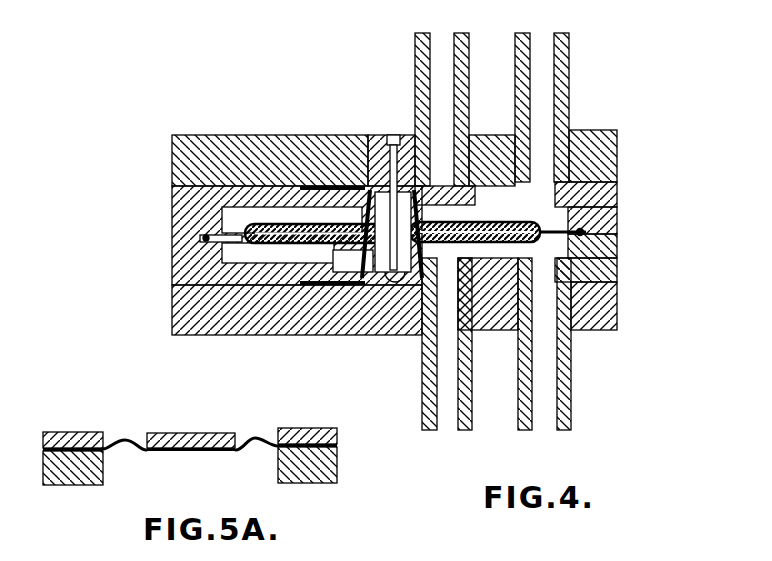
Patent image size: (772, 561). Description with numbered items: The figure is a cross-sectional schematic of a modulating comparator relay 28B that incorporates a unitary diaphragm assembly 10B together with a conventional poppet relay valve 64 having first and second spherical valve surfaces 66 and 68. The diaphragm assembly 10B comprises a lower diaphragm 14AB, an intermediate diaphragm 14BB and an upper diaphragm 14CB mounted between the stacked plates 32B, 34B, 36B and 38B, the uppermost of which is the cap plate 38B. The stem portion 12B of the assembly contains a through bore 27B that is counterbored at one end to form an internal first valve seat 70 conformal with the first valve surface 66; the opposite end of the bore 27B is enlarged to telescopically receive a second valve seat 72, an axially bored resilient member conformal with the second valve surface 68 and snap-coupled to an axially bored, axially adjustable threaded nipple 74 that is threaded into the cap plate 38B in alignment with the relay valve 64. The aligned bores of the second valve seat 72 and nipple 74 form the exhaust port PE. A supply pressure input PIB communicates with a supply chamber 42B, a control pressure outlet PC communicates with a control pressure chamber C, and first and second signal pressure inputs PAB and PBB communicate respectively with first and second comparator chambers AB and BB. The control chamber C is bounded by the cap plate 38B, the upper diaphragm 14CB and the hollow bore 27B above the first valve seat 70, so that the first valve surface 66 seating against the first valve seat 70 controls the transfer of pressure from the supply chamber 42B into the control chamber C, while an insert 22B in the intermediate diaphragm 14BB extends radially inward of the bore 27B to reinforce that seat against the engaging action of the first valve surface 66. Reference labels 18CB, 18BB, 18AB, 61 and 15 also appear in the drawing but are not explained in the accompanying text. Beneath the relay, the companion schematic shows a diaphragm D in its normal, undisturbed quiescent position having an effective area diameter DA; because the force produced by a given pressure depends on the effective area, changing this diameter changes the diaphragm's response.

In FIG. 4, the modulating comparator relay 28B is at (120, 158).
In FIG. 4, the insert 22B is at (297, 310).
In FIG. 4, the second comparator chamber BB is at (247, 228).
In FIG. 4, the first comparator chamber AB is at (249, 262).
In FIG. 4, the control pressure chamber C is at (353, 261).
In FIG. 4, the left passage 18BB is at (200, 238).
In FIG. 4, the poppet relay valve 64 is at (348, 213).
In FIG. 4, the second valve seat 72 is at (498, 221).
In FIG. 4, the central cavity 15 is at (402, 239).
In FIG. 4, the exhaust port PE is at (394, 135).
In FIG. 4, the first valve seat 70 is at (397, 280).
In FIG. 4, the threaded nipple 74 is at (388, 135).
In FIG. 4, the through bore 27B is at (372, 176).
In FIG. 4, the second spherical valve surface 68 is at (420, 190).
In FIG. 4, the stem guide lower 61 is at (437, 190).
In FIG. 4, the upper diaphragm passage 18CB is at (315, 186).
In FIG. 4, the upper diaphragm 14CB is at (328, 186).
In FIG. 4, the lower diaphragm passage 18AB is at (262, 252).
In FIG. 4, the diaphragm 14AB is at (322, 270).
In FIG. 4, the first spherical valve surface 66 is at (378, 274).
In FIG. 4, the control pressure outlet PC is at (428, 33).
In FIG. 4, the second signal pressure input PBB is at (557, 33).
In FIG. 4, the supply pressure input PIB is at (448, 432).
In FIG. 4, the first signal pressure input PAB is at (546, 432).
In FIG. 4, the cap plate 38B is at (604, 156).
In FIG. 4, the unitary diaphragm assembly 10B is at (585, 212).
In FIG. 4, the stacked plate 36B is at (606, 210).
In FIG. 4, the stacked plate 34B is at (608, 250).
In FIG. 4, the intermediate diaphragm 14BB is at (575, 243).
In FIG. 4, the stacked plate 32B is at (612, 318).
In FIG. 4, the supply chamber 42B is at (442, 285).
In FIG. 4, the stem portion 12B is at (476, 196).
In FIG. 5A, the schematic diaphragm D is at (93, 485).
In FIG. 5A, the effective area diameter DA is at (255, 463).